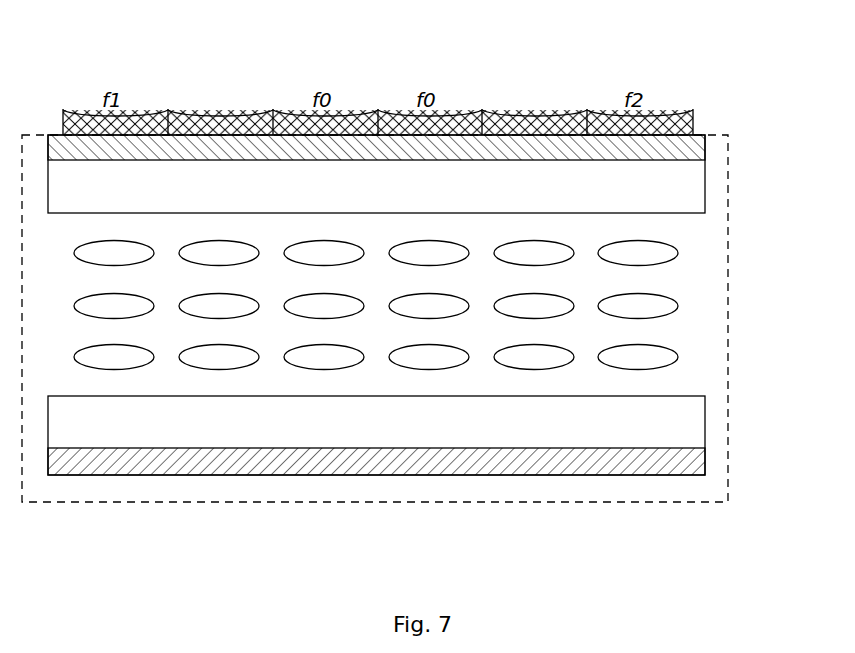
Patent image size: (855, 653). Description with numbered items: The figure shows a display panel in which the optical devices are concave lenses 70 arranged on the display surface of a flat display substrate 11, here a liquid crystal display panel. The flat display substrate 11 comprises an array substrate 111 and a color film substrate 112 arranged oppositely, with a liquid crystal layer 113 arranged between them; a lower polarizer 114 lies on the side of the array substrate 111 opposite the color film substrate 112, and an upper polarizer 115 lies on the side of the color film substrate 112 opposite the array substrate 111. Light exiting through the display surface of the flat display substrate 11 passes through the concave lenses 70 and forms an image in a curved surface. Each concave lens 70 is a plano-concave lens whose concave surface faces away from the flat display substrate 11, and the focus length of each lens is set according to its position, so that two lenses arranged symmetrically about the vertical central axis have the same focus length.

The flat display substrate 11 is at (587, 502).
The array substrate 111 is at (115, 440).
The color film substrate 112 is at (518, 175).
The liquid crystal layer 113 is at (692, 318).
The lower polarizer 114 is at (285, 470).
The upper polarizer 115 is at (205, 137).
The concave lenses 70 is at (675, 117).